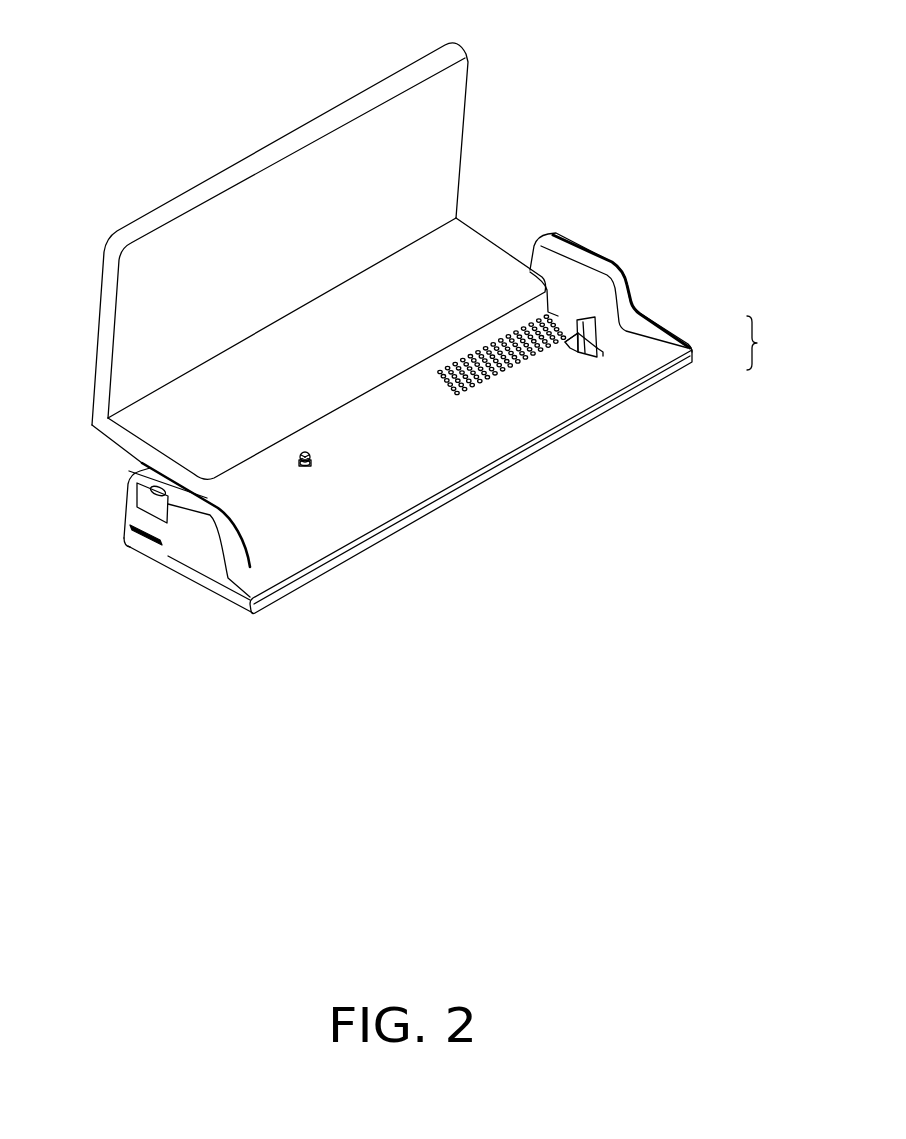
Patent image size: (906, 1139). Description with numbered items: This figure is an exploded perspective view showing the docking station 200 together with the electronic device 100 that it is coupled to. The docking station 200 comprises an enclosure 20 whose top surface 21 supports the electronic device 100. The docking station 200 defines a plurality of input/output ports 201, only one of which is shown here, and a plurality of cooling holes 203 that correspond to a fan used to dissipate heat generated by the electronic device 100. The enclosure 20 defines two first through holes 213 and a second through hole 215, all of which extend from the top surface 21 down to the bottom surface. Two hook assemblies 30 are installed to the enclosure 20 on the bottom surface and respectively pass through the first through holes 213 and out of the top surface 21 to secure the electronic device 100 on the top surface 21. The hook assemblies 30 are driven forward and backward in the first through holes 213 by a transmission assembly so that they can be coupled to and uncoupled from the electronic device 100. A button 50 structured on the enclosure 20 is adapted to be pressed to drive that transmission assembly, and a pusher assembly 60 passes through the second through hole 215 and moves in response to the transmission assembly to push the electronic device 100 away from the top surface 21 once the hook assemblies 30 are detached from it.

The electronic device 100 is at (295, 147).
The enclosure 20 is at (436, 464).
The top surface 21 is at (448, 440).
The cooling holes 203 is at (547, 320).
The hook assemblies 30 is at (592, 333).
The first through holes 213 is at (600, 351).
The docking station 200 is at (775, 343).
The button 50 is at (142, 514).
The input/output ports 201 is at (127, 533).
The pusher assembly 60 is at (307, 453).
The second through hole 215 is at (305, 463).